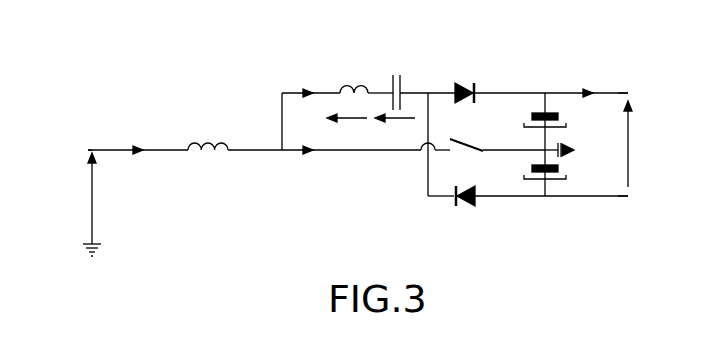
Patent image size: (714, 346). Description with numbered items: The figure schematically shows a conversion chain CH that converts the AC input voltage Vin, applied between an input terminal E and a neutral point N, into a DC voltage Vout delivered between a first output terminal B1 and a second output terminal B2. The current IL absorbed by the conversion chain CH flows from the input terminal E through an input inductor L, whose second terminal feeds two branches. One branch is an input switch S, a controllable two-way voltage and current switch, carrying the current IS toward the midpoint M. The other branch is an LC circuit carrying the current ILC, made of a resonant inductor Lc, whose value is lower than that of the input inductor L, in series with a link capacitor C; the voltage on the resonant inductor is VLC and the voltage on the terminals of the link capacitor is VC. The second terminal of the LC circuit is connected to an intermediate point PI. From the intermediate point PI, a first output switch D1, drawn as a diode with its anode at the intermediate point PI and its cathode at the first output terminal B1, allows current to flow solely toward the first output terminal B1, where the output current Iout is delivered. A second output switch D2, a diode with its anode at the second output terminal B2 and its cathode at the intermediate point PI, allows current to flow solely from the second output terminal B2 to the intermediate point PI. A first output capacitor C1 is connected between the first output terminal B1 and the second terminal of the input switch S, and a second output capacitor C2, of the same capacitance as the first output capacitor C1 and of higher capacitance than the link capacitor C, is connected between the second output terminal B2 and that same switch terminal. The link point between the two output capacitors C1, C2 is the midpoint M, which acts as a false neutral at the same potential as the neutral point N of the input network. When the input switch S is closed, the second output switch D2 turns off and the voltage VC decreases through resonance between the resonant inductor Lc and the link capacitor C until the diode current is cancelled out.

The conversion chain CH is at (84, 85).
The input terminal E is at (132, 134).
The neutral point N is at (92, 265).
The current absorbed by the conversion chain IL is at (140, 136).
The input inductor L is at (208, 134).
The current absorbed by the LC circuit ILC is at (304, 78).
The current in the input switch IS is at (351, 137).
The resonant inductor Lc is at (354, 72).
The link capacitor C is at (396, 80).
The voltage on the resonant inductor VLC is at (347, 130).
The voltage on the link capacitor VC is at (395, 130).
The intermediate point PI is at (428, 93).
The first output switch D1 is at (466, 82).
The input switch S is at (497, 135).
The second output switch D2 is at (468, 185).
The first output capacitor C1 is at (558, 119).
The second output capacitor C2 is at (558, 175).
The midpoint M is at (571, 150).
The output current Iout is at (590, 79).
The first output terminal B1 is at (632, 79).
The second output terminal B2 is at (632, 209).
The AC input voltage Vin is at (79, 196).
The DC output voltage Vout is at (647, 144).